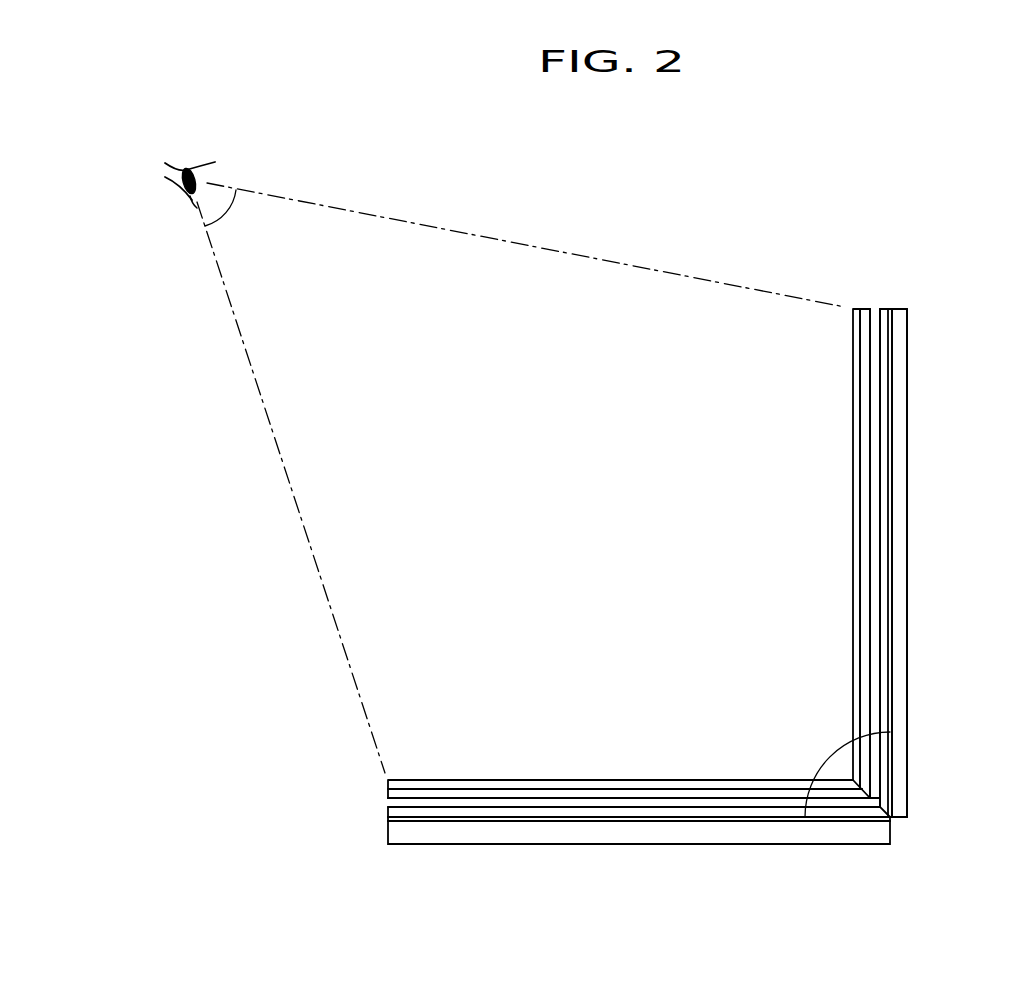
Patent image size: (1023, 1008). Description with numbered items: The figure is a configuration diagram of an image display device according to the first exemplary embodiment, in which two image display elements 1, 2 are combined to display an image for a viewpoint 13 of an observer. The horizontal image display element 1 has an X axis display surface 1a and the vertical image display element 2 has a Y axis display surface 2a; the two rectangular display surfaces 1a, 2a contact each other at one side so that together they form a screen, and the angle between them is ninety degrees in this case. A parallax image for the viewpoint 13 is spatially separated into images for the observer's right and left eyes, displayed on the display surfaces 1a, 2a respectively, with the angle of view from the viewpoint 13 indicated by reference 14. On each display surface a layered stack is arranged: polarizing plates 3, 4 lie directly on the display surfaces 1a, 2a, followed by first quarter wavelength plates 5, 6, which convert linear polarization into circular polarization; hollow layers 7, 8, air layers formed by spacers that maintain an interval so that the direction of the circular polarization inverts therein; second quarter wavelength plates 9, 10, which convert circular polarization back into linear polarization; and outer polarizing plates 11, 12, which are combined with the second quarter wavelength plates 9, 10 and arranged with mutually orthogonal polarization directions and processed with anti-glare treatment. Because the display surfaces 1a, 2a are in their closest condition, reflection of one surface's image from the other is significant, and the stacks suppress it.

The image display element 1 is at (613, 833).
The display surface 1a is at (708, 822).
The image display element 2 is at (897, 513).
The display surface 2a is at (893, 560).
The polarizing plate 3 is at (767, 822).
The polarizing plate 4 is at (895, 640).
The first quarter wavelength plate 5 is at (503, 818).
The first quarter wavelength plate 6 is at (880, 328).
The hollow layer 7 is at (457, 807).
The hollow layer 8 is at (877, 397).
The second quarter wavelength plate 9 is at (441, 793).
The second quarter wavelength plate 10 is at (866, 359).
The polarizing plate 11 is at (551, 782).
The polarizing plate 12 is at (857, 406).
The viewpoint 13 is at (186, 168).
The angle of view 14 is at (222, 212).